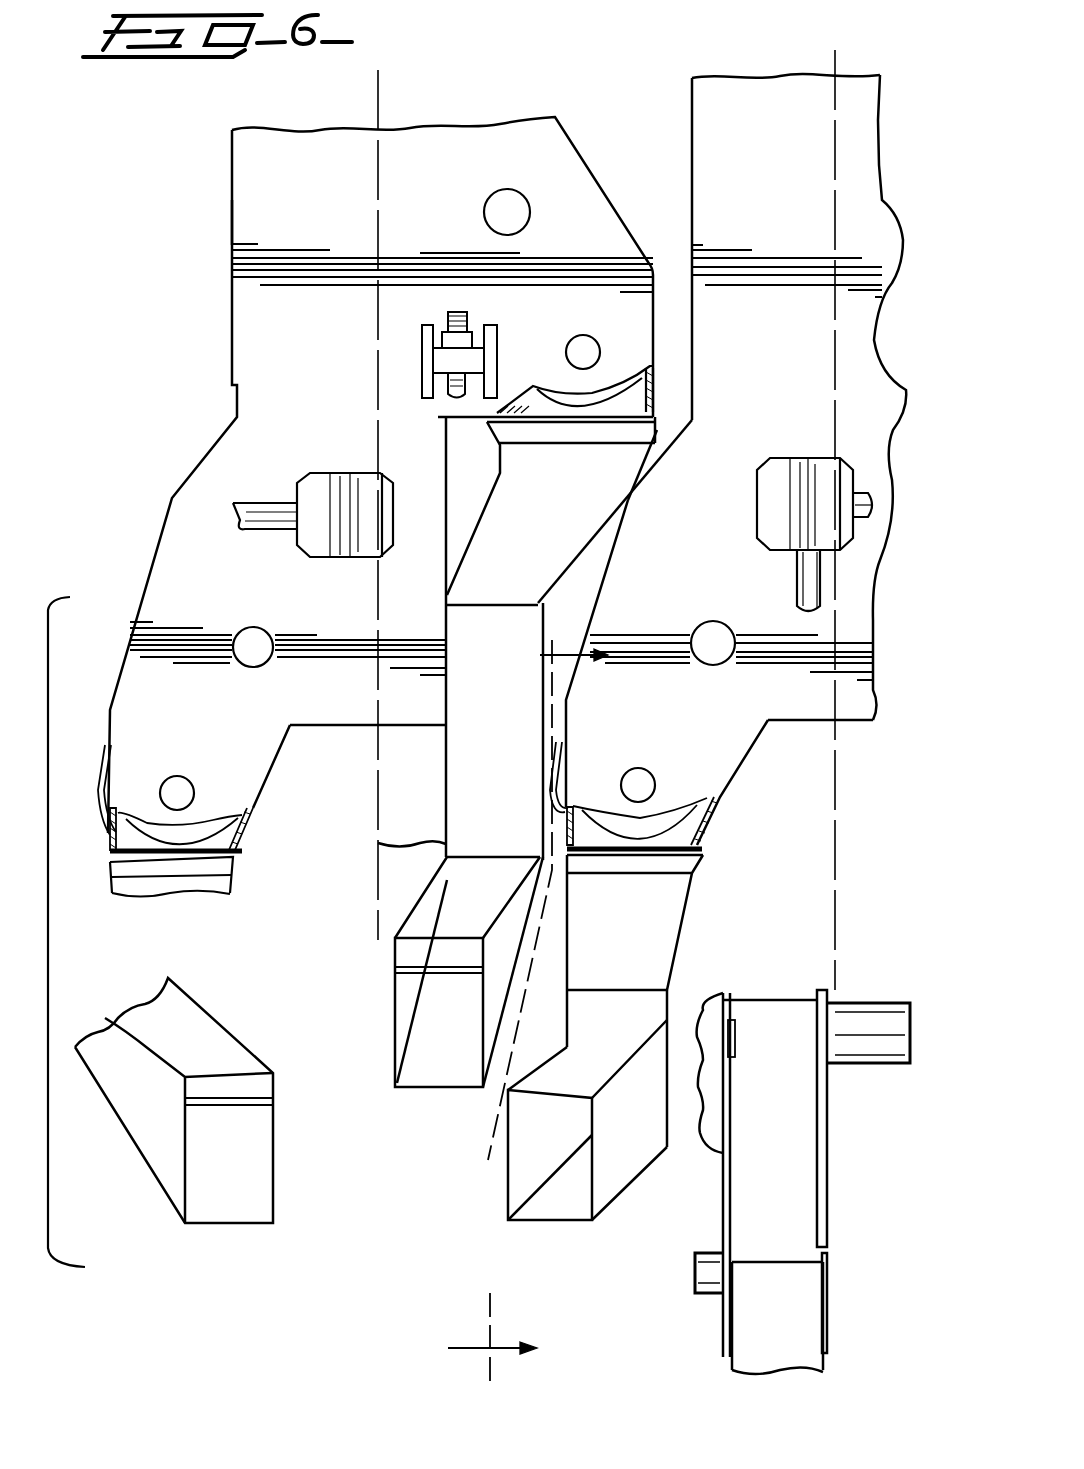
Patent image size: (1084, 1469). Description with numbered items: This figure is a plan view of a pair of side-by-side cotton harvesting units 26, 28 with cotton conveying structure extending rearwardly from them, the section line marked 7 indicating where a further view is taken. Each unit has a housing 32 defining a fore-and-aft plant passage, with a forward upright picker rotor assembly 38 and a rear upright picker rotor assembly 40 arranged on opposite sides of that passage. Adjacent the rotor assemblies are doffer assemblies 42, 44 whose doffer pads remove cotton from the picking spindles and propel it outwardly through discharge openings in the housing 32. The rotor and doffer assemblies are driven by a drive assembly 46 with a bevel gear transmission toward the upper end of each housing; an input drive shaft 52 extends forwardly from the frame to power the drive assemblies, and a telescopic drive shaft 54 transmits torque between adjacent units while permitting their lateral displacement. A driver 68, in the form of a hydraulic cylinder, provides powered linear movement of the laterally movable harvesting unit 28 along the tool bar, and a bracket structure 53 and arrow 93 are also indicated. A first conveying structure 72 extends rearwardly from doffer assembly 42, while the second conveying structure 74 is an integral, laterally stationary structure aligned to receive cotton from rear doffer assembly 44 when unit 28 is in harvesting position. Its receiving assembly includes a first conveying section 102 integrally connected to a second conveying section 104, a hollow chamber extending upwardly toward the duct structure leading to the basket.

The cotton harvesting unit 26 is at (488, 112).
The laterally movable cotton harvesting unit 28 is at (782, 70).
The housing 32 is at (240, 224).
The forward upright picker rotor assembly 38 is at (497, 208).
The doffer assembly 42 is at (593, 346).
The drive assembly 46 is at (347, 462).
The telescopic drive shaft 54 is at (272, 508).
The input drive shaft 52 is at (800, 586).
The rear upright picker rotor assembly 40 is at (250, 640).
The rear doffer assembly 44 is at (182, 793).
The second conveying structure 74 is at (234, 888).
The first conveying structure 72 is at (440, 843).
The block assembly 93 is at (642, 1037).
The first conveying section 102 is at (642, 931).
The second conveying section 104 is at (622, 1043).
The bracket assembly 53 is at (802, 1182).
The driver 68 is at (790, 1305).
The section line 7- 7 is at (528, 1001).